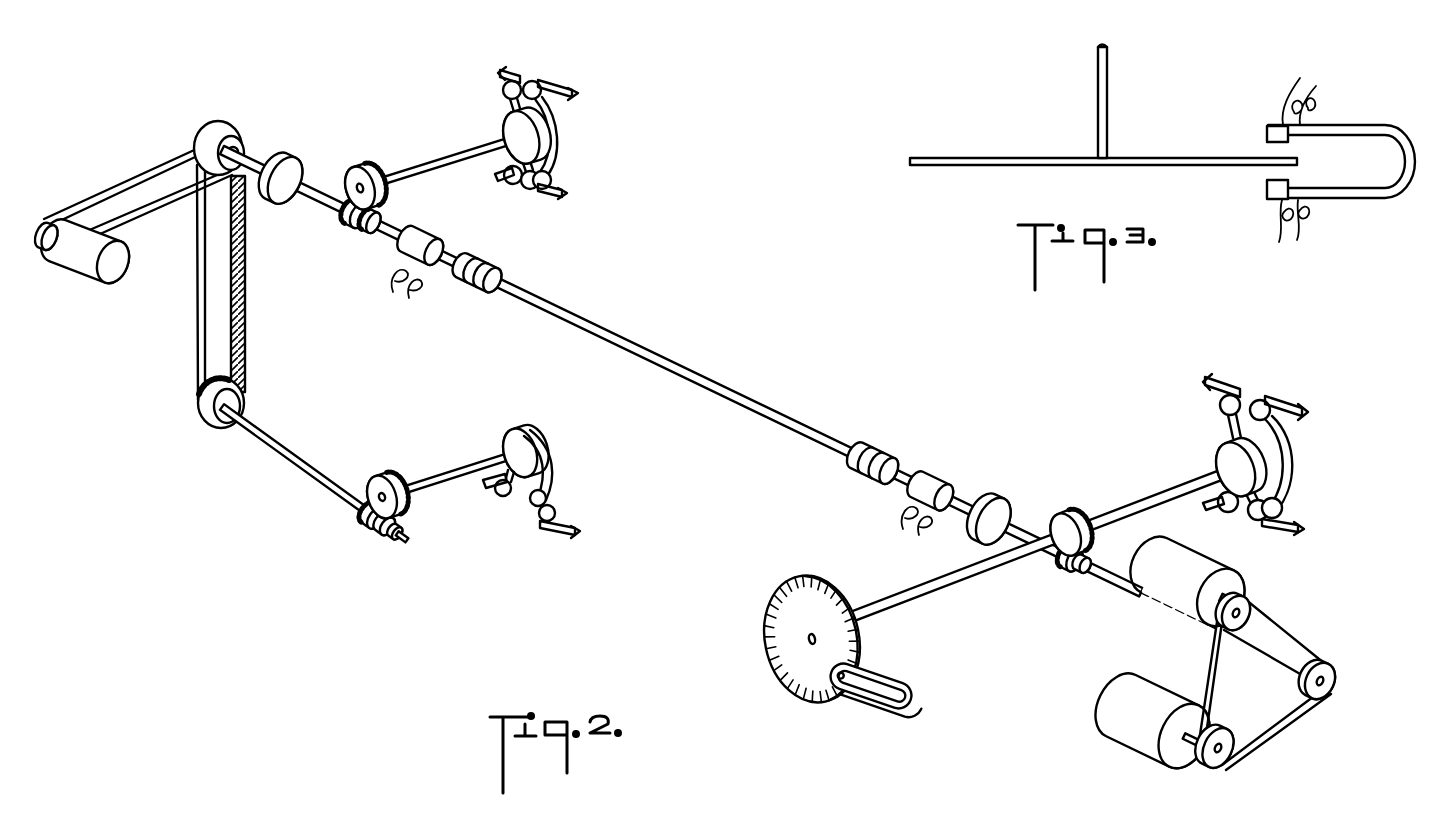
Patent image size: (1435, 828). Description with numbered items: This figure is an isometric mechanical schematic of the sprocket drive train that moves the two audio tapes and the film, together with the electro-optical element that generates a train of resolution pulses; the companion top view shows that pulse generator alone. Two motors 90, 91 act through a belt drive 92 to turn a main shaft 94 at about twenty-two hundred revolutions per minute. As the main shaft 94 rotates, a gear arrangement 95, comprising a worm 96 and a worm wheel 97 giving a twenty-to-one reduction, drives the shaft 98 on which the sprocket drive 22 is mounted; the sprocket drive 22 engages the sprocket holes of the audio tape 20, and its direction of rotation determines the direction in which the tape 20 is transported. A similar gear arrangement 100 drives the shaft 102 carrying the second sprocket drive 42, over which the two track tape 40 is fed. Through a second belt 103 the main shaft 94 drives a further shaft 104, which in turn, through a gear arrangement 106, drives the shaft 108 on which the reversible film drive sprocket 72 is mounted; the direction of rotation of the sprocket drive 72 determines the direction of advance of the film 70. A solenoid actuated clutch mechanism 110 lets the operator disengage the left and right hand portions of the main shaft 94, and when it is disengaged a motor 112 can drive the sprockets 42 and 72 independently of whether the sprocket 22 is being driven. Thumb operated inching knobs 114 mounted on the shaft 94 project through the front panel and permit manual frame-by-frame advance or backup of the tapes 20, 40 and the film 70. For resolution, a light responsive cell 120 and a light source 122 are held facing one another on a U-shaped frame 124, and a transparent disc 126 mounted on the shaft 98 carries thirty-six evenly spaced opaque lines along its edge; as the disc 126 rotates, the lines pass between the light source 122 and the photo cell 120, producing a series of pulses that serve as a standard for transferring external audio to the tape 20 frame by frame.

In FIG. 2, the tape 20 is at (1262, 433).
In FIG. 2, the sprocket drive 22 is at (1253, 474).
In FIG. 2, the two track tape 40 is at (540, 112).
In FIG. 2, the second sprocket drive 42 is at (547, 143).
In FIG. 2, the film 70 is at (547, 476).
In FIG. 2, the sprocket drive 72 is at (527, 437).
In FIG. 2, the motor 90 is at (1193, 558).
In FIG. 2, the motor 91 is at (1122, 743).
In FIG. 2, the belt drive 92 is at (1288, 626).
In FIG. 2, the main shaft 94 is at (693, 376).
In FIG. 2, the gear arrangement 95 is at (1082, 500).
In FIG. 2, the worm 96 is at (1076, 578).
In FIG. 2, the worm wheel 97 is at (1092, 546).
In FIG. 2, the shaft 98 is at (1160, 496).
In FIG. 3, the shaft 98 is at (1108, 73).
In FIG. 2, the gear arrangement 100 is at (373, 174).
In FIG. 2, the shaft 102 is at (450, 167).
In FIG. 2, the second belt 103 is at (246, 322).
In FIG. 2, the shaft 104 is at (292, 453).
In FIG. 2, the gear arrangement 106 is at (404, 471).
In FIG. 2, the shaft 108 is at (456, 470).
In FIG. 2, the solenoid actuated clutch mechanism 110 is at (443, 240).
In FIG. 2, the motor 112 is at (85, 268).
In FIG. 2, the thumb operated knobs 114 is at (293, 167).
In FIG. 3, the light responsive cell 120 is at (1267, 182).
In FIG. 3, the light source 122 is at (1266, 136).
In FIG. 2, the U-shaped frame 124 is at (891, 712).
In FIG. 3, the U-shaped frame 124 is at (1393, 120).
In FIG. 2, the transparent disc 126 is at (793, 578).
In FIG. 3, the transparent disc 126 is at (1028, 158).